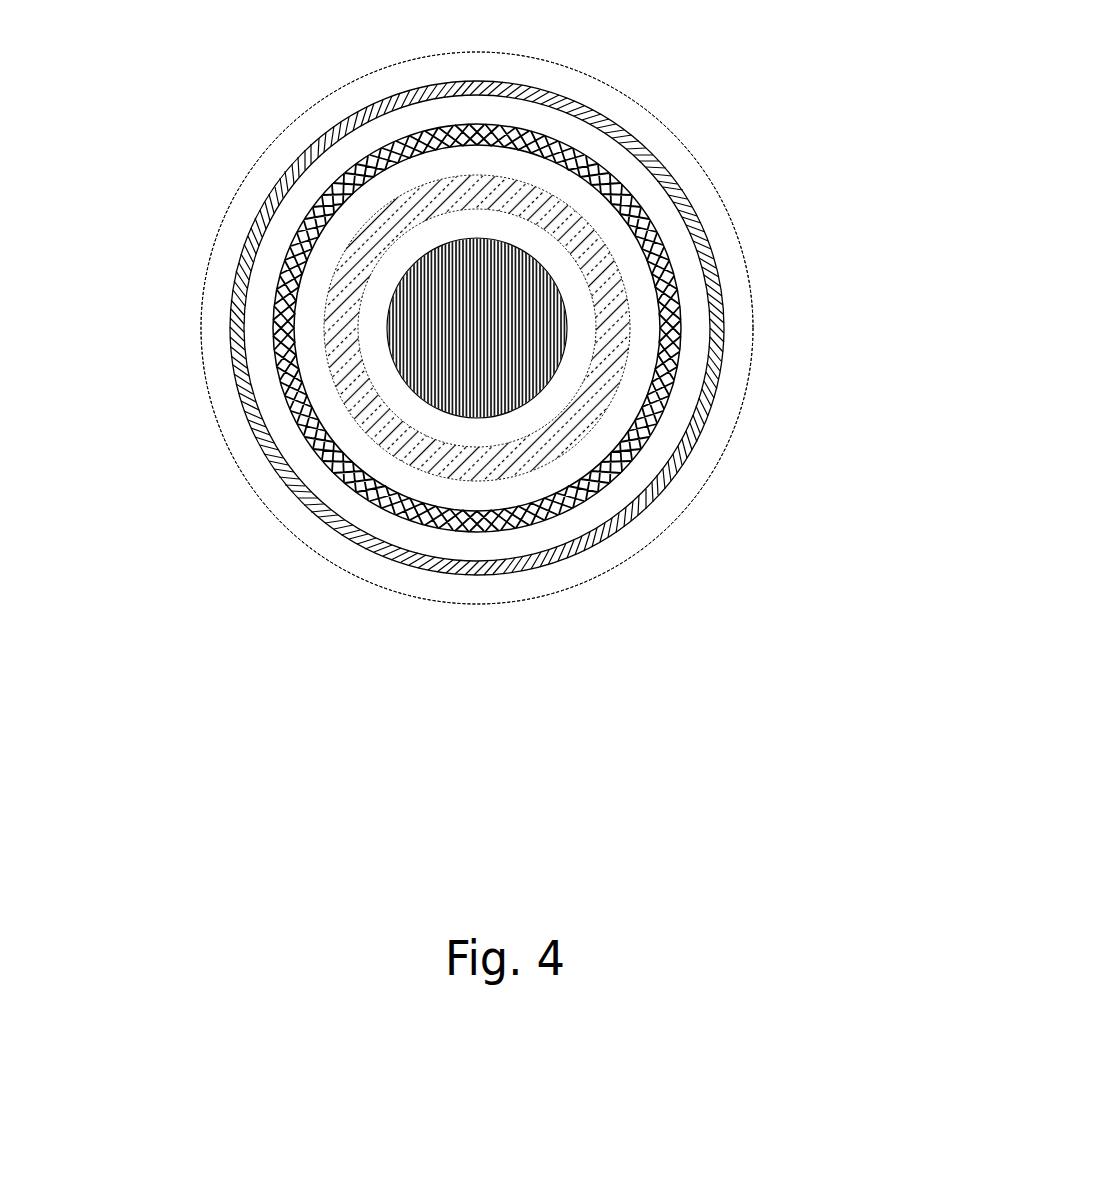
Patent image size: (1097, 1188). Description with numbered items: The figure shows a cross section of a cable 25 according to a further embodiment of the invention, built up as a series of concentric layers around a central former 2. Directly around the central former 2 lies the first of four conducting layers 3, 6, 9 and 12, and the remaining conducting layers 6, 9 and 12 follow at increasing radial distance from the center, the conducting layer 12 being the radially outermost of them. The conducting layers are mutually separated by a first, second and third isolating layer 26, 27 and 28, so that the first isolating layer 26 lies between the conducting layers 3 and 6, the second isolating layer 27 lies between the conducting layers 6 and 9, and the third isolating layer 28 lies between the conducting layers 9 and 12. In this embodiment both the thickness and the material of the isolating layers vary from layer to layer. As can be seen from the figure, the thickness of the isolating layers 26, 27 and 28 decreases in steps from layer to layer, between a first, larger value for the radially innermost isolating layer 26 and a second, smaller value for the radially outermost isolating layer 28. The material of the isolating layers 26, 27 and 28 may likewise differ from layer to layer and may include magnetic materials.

The central former 2 is at (507, 340).
The conducting layer 3 is at (570, 325).
The conducting layer 6 is at (630, 257).
The conducting layer 9 is at (260, 315).
The conducting layer 12 is at (317, 535).
The cable 25 is at (733, 50).
The first isolating layer 26 is at (613, 292).
The second isolating layer 27 is at (290, 243).
The third isolating layer 28 is at (257, 433).